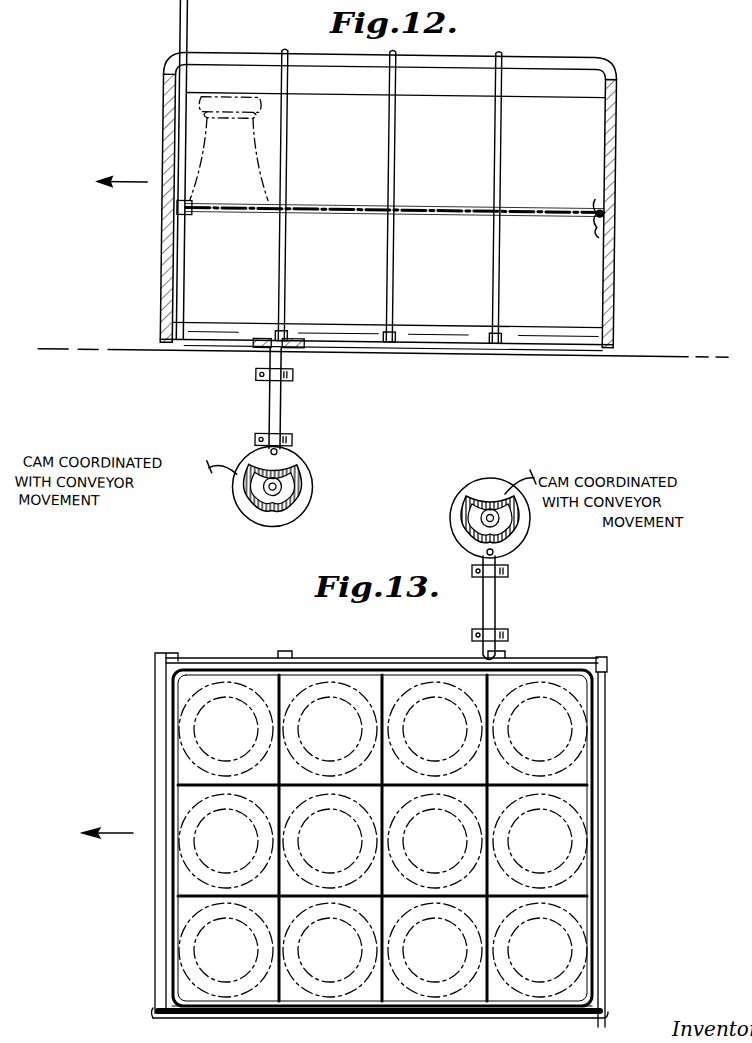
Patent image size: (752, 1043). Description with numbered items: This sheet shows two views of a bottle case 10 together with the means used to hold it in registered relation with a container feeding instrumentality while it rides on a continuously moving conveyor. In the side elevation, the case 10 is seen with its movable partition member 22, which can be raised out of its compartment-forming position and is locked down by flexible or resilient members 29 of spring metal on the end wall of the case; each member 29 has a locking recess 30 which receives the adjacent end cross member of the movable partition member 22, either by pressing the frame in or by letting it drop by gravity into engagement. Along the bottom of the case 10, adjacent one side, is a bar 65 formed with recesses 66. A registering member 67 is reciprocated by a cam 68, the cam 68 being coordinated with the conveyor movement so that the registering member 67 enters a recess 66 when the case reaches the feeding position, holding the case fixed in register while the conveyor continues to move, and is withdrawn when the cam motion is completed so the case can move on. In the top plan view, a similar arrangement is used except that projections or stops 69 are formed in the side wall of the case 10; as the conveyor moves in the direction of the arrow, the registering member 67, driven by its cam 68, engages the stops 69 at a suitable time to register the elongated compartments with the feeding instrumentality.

In FIG. 12, the case 10 is at (619, 154).
In FIG. 13, the case 10 is at (610, 809).
In FIG. 12, the movable partition member 22 is at (187, 25).
In FIG. 13, the movable partition member 22 is at (398, 1019).
In FIG. 12, the flexible or resilient member 29 is at (598, 207).
In FIG. 12, the locking recess 30 is at (599, 216).
In FIG. 12, the bar 65 is at (466, 354).
In FIG. 12, the recess 66 is at (262, 343).
In FIG. 12, the registering member 67 is at (270, 404).
In FIG. 13, the registering member 67 is at (492, 606).
In FIG. 12, the cam 68 is at (240, 488).
In FIG. 13, the cam 68 is at (522, 525).
In FIG. 13, the stops 69 is at (286, 664).